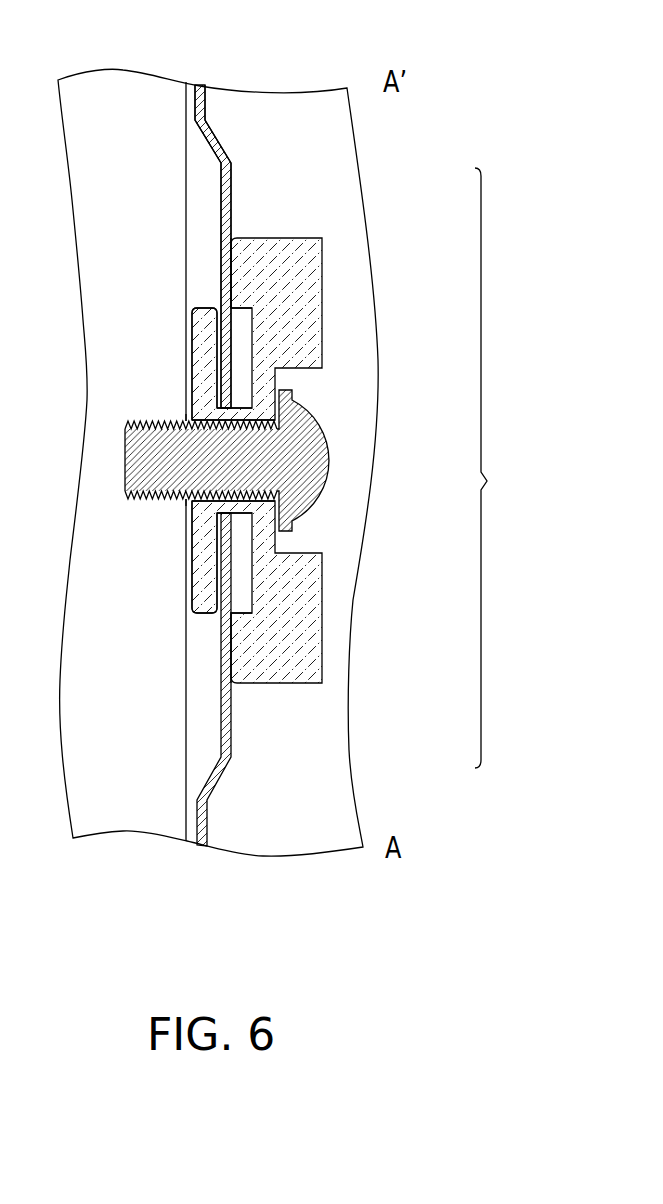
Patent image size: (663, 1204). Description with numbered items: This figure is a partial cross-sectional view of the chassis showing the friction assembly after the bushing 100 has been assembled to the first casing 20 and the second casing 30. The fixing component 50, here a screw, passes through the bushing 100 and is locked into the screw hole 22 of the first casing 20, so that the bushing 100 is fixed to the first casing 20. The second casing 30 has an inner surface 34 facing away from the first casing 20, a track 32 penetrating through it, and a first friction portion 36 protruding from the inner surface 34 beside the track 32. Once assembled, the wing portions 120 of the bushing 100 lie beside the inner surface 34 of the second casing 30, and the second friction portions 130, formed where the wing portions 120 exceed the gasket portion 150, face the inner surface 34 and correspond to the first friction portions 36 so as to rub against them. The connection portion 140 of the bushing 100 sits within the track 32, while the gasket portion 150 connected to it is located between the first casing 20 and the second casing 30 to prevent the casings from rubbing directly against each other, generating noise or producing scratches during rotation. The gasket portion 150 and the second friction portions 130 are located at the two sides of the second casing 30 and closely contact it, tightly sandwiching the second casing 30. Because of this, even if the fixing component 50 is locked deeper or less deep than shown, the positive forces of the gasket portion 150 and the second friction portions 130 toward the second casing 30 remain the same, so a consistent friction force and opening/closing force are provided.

The first casing 20 is at (127, 97).
The screw hole 22 is at (148, 420).
The second casing 30 is at (236, 430).
The track 32 is at (218, 505).
The inner surface 34 is at (208, 108).
The first friction portion 36 is at (231, 186).
The fixing component 50 is at (306, 458).
The bushing 100 is at (328, 468).
The wing portion 120 is at (297, 330).
The second friction portion 130 is at (242, 270).
The connection portion 140 is at (238, 510).
The gasket portion 150 is at (208, 558).